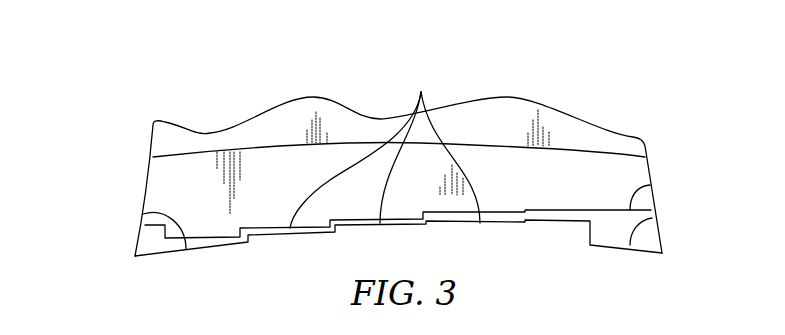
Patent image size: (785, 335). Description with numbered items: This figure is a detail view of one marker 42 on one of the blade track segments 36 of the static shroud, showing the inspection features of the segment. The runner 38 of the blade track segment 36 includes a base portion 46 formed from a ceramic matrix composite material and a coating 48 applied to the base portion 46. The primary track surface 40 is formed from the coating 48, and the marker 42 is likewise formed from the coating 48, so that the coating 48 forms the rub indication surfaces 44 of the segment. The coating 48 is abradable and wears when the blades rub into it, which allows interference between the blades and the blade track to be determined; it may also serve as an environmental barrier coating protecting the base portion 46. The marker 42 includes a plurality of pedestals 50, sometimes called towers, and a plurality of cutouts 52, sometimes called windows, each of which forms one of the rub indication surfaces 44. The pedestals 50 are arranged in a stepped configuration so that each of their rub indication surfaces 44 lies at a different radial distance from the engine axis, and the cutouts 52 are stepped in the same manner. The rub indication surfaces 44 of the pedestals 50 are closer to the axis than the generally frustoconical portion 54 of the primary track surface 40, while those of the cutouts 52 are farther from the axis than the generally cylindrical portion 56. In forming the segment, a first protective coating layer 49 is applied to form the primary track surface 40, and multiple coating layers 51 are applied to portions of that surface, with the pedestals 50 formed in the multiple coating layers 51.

The blade track segment 36 is at (615, 105).
The runner 38 is at (108, 148).
The primary track surface 40 is at (78, 211).
The marker 42 is at (423, 60).
The rub indication surfaces 44 is at (385, 148).
The base portion 46 is at (264, 126).
The coating 48 is at (170, 175).
The first protective coating layer 49 is at (623, 170).
The pedestals 50 is at (516, 198).
The multiple coating layers 51 is at (206, 222).
The cutouts 52 is at (268, 248).
The frustoconical portion 54 is at (650, 185).
The cylindrical portion 56 is at (143, 213).